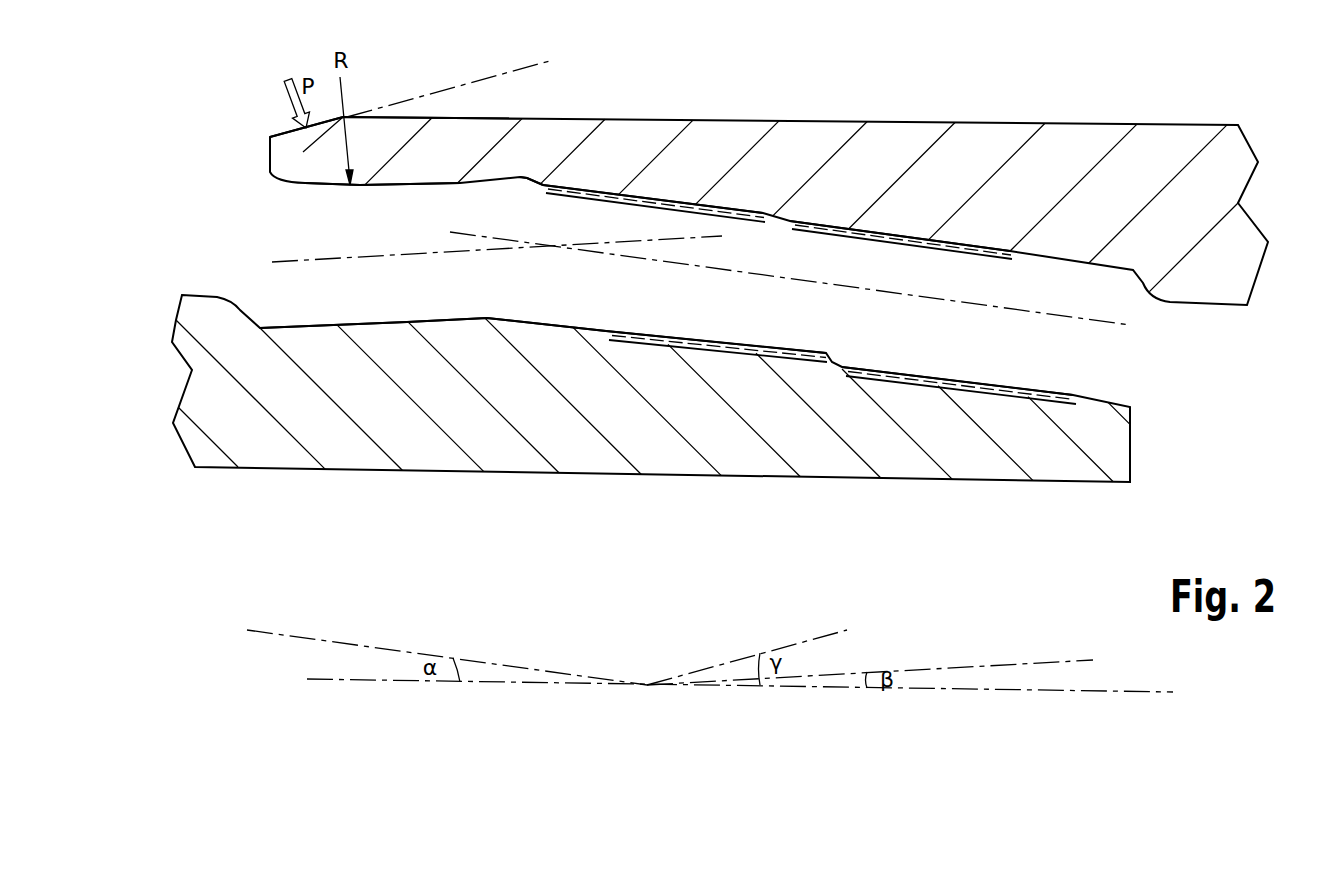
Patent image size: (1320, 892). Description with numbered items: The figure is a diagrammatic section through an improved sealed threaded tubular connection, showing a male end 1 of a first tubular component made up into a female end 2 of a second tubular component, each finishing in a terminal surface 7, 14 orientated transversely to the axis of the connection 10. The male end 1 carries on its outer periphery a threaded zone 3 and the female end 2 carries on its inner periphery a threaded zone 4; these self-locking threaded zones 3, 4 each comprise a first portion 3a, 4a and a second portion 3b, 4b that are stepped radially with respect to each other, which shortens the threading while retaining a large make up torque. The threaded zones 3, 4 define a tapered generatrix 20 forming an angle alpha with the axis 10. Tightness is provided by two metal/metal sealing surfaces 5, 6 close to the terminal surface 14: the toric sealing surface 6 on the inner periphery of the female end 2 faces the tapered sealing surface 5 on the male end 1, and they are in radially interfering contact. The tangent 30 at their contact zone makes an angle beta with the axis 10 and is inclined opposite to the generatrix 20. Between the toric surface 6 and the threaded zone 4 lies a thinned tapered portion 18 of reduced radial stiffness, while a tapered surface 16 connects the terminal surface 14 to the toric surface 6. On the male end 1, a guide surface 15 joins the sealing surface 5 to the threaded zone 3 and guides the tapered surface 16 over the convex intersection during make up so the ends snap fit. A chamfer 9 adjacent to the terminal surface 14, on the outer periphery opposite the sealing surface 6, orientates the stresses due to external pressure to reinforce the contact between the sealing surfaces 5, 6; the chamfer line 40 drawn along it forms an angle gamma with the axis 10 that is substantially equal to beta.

The male end 1 is at (848, 443).
The female end 2 is at (1040, 143).
The threaded zone 3 is at (841, 334).
The first portion of threaded zone 3a is at (758, 335).
The second portion of threaded zone 3b is at (959, 362).
The threaded zone 4 is at (777, 198).
The first portion of threaded zone 4a is at (722, 203).
The second portion of threaded zone 4b is at (901, 223).
The sealing surface 5 is at (387, 328).
The sealing surface 6 is at (408, 183).
The terminal surface 7 is at (1135, 416).
The chamfer 9 is at (283, 130).
The axis of the connection 10 is at (1068, 692).
The terminal surface 14 is at (268, 155).
The guide surface 15 is at (570, 326).
The tapered surface 16 is at (310, 185).
The thinned tapered portion 18 is at (525, 178).
The tapered generatrix 20 is at (1065, 315).
The tangent 30 is at (290, 262).
The axis of upper surface 40 is at (535, 65).